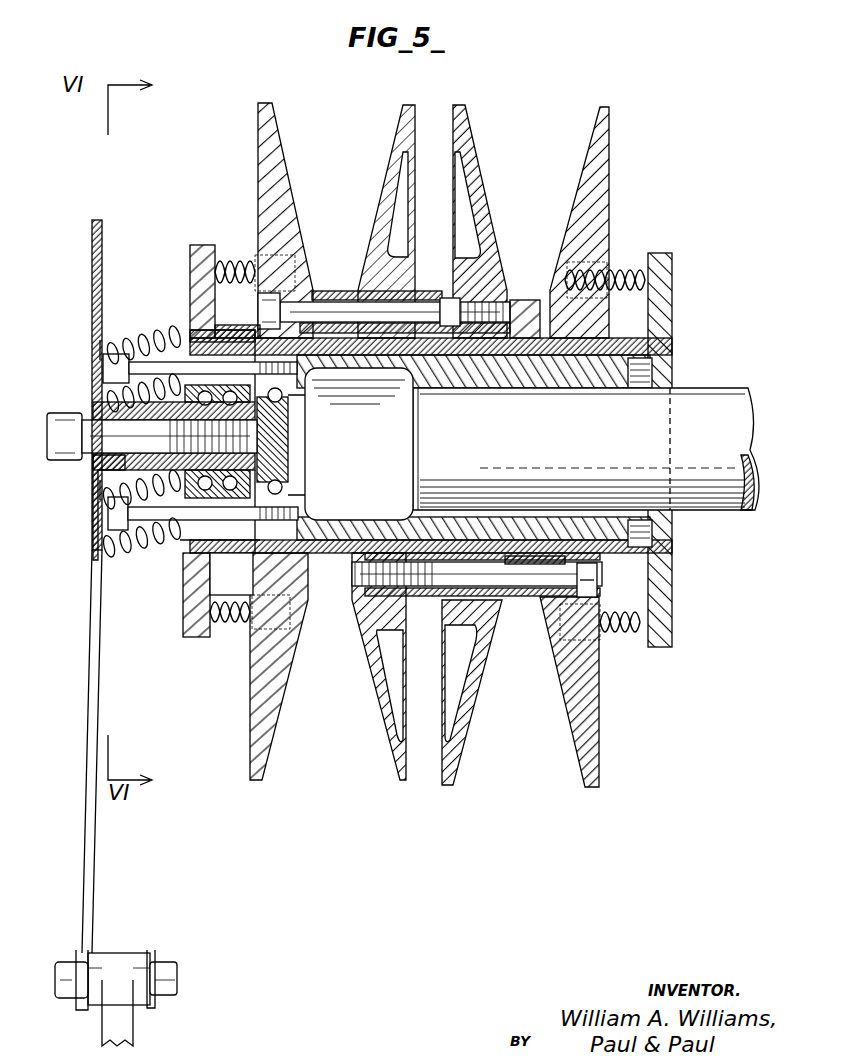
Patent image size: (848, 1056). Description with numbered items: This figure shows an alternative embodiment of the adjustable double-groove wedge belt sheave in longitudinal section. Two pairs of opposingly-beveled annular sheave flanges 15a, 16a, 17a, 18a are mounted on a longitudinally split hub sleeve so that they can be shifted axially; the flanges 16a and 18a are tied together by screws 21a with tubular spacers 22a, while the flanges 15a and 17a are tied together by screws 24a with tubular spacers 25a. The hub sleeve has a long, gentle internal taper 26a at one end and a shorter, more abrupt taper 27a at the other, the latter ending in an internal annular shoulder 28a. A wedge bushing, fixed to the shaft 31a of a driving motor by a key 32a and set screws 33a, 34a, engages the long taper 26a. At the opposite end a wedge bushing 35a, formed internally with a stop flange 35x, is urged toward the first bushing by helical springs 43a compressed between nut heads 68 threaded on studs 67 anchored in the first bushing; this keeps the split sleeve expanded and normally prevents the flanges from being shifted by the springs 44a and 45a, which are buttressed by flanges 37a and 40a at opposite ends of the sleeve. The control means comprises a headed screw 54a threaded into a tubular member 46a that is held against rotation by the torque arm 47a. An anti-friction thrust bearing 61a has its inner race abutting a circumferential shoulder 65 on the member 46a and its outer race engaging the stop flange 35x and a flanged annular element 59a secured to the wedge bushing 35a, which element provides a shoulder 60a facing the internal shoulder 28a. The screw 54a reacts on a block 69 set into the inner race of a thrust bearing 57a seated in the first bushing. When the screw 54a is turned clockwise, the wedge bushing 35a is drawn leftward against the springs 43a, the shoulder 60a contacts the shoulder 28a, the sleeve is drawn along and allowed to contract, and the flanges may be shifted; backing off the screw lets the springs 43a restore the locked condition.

The sheave flange 15a is at (266, 100).
The sheave flange 16a is at (409, 102).
The sheave flange 17a is at (461, 102).
The sheave flange 18a is at (605, 104).
The screw 21a is at (426, 598).
The tubular spacer 22a is at (520, 600).
The screw 24a is at (336, 300).
The tubular spacer 25a is at (438, 296).
The internal taper 26a is at (524, 338).
The internal taper 27a is at (190, 338).
The internal annular shoulder 28a is at (186, 545).
The shaft 31a is at (586, 449).
The key 32a is at (545, 505).
The set screw 33a is at (628, 552).
The set screw 34a is at (655, 372).
The stop flange 35x is at (103, 370).
The wedge bushing 35a is at (162, 525).
The flange 37a is at (202, 245).
The flange 40a is at (672, 312).
The helical spring 43a is at (146, 335).
The spring 44a is at (234, 258).
The spring 45a is at (634, 258).
The tubular member 46a is at (100, 466).
The torque arm 47a is at (90, 665).
The headed screw 54a is at (47, 438).
The thrust bearing 57a is at (292, 490).
The flanged annular element 59a is at (232, 553).
The shoulder 60a is at (236, 340).
The anti-friction thrust bearing 61a is at (185, 412).
The circumferential shoulder 65 is at (295, 424).
The stud 67 is at (130, 340).
The nut head 68 is at (92, 322).
The block 69 is at (296, 452).